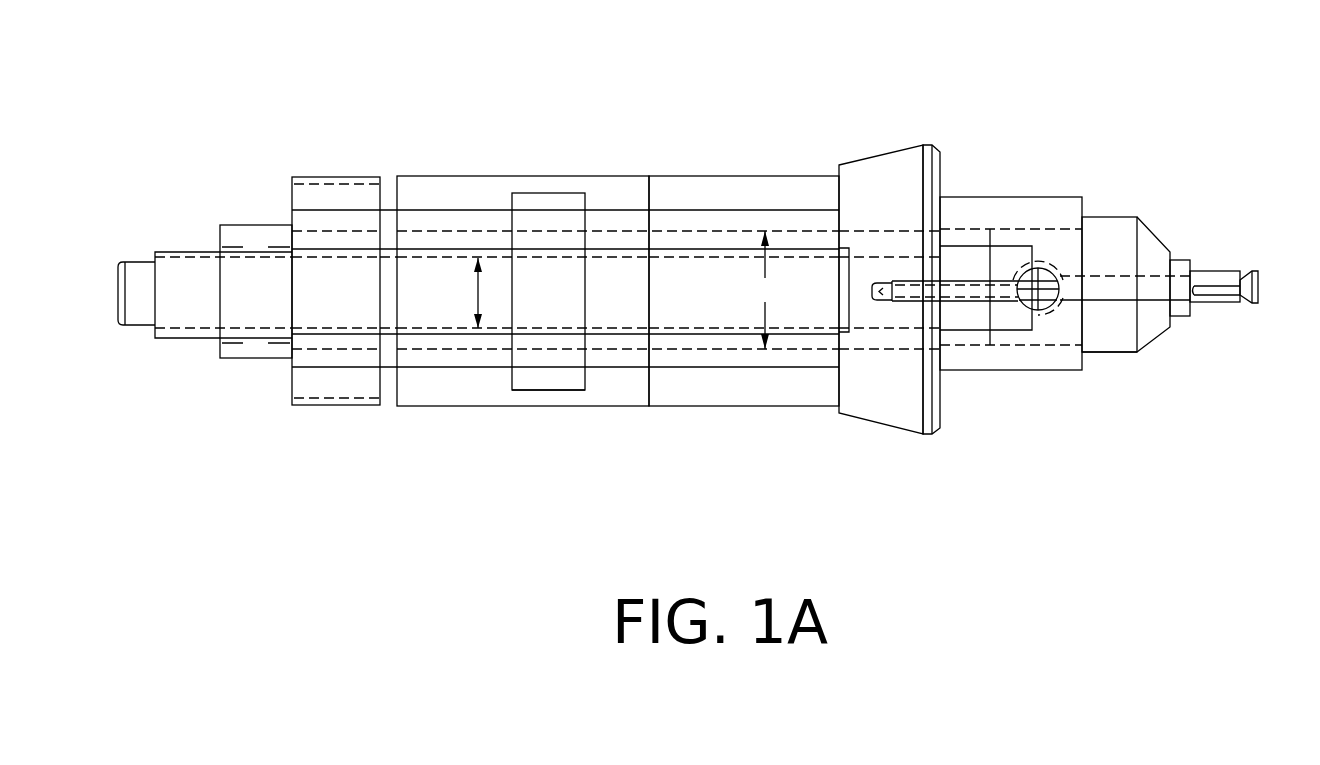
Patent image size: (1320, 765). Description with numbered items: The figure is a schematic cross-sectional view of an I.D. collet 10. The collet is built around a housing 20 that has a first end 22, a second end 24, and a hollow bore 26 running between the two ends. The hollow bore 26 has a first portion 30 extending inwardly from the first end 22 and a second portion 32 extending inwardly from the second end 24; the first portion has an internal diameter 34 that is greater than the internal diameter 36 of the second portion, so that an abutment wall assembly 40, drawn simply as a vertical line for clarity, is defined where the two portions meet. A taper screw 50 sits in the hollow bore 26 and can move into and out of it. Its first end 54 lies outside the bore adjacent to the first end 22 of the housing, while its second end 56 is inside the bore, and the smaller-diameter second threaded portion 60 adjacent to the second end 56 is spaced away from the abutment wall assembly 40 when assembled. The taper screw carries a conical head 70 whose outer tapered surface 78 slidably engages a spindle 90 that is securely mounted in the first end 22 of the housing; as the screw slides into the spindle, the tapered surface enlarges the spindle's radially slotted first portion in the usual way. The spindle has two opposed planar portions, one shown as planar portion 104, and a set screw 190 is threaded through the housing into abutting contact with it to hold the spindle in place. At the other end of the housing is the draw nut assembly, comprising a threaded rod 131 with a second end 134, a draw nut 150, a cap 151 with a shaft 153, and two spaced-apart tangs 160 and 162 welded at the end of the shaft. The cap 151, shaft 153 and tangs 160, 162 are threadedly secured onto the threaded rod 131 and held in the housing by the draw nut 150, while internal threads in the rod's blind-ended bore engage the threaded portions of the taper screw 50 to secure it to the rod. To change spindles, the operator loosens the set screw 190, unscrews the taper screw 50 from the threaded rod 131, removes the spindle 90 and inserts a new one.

The I.D. collet 10 is at (1203, 95).
The housing 20 is at (785, 145).
The first end 22 is at (1083, 206).
The second end 24 is at (387, 232).
The hollow bore 26 is at (716, 232).
The first portion 30 is at (973, 180).
The second portion 32 is at (618, 233).
The internal diameter 34 is at (764, 290).
The internal diameter 36 is at (464, 293).
The abutment wall assembly 40 is at (652, 392).
The taper screw 50 is at (1127, 290).
The first end 54 is at (1240, 303).
The second end 56 is at (891, 282).
The second threaded portion 60 is at (877, 302).
The conical head 70 is at (1269, 313).
The outer tapered surface 78 is at (1247, 272).
The spindle 90 is at (1108, 353).
The planar portion 104 is at (1008, 318).
The threaded rod 131 is at (187, 252).
The second end 134 is at (124, 262).
The draw nut 150 is at (247, 360).
The cap 151 is at (315, 177).
The shaft 153 is at (391, 372).
The tang 160 is at (547, 192).
The tang 162 is at (548, 390).
The set screw 190 is at (1037, 264).